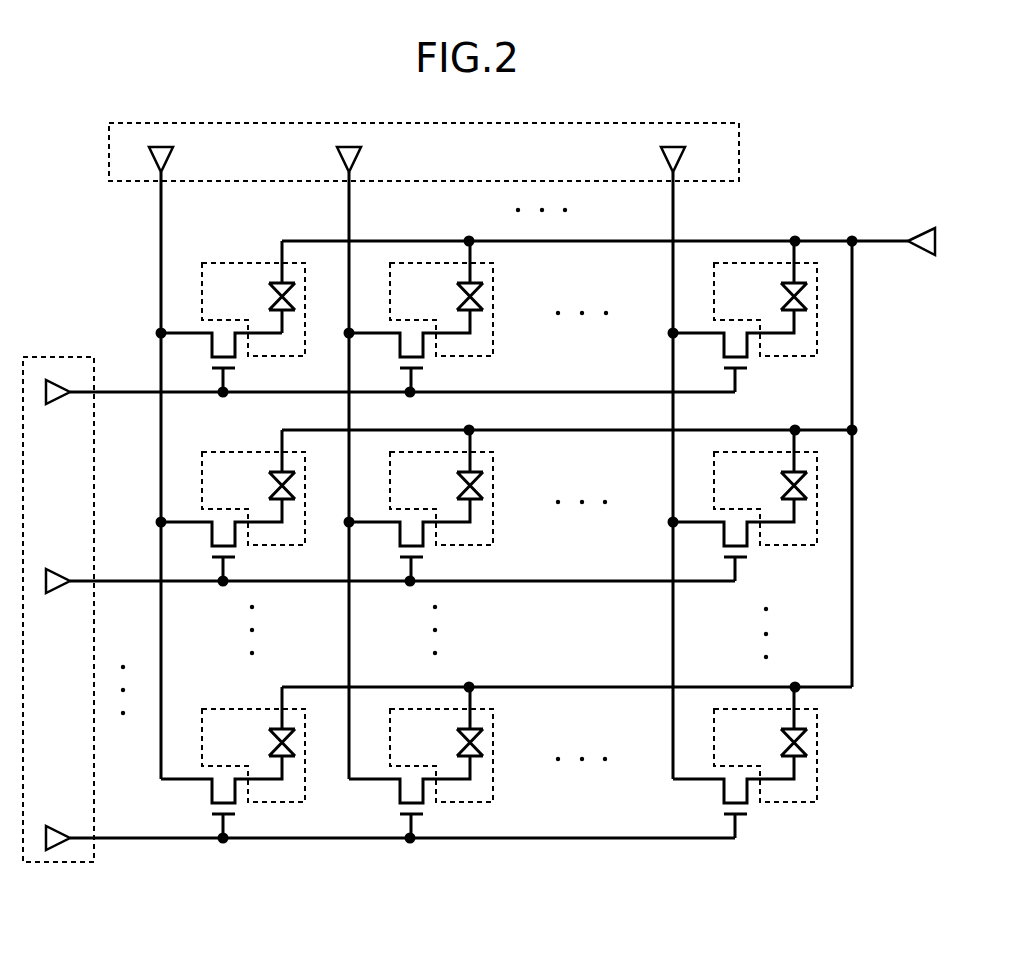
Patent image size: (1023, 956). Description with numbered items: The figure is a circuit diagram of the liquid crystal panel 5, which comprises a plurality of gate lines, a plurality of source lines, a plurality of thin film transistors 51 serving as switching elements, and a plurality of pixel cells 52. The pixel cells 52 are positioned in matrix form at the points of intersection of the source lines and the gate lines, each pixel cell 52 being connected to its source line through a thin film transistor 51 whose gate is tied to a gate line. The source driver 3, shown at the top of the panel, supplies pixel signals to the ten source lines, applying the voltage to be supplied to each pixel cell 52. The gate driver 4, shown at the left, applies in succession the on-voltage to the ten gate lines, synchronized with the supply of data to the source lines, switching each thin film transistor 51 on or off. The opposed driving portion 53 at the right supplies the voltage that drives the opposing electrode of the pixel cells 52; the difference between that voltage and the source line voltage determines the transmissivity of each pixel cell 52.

The source driver 3 is at (739, 157).
The gate driver 4 is at (76, 357).
The liquid crystal panel 5 is at (489, 497).
The thin film transistor 51 is at (199, 393).
The pixel cell 52 is at (253, 276).
The opposed driving portion 53 is at (936, 238).